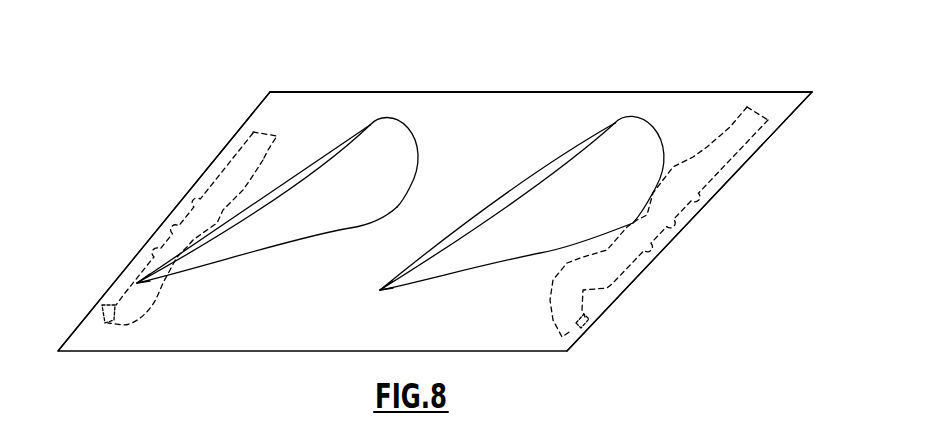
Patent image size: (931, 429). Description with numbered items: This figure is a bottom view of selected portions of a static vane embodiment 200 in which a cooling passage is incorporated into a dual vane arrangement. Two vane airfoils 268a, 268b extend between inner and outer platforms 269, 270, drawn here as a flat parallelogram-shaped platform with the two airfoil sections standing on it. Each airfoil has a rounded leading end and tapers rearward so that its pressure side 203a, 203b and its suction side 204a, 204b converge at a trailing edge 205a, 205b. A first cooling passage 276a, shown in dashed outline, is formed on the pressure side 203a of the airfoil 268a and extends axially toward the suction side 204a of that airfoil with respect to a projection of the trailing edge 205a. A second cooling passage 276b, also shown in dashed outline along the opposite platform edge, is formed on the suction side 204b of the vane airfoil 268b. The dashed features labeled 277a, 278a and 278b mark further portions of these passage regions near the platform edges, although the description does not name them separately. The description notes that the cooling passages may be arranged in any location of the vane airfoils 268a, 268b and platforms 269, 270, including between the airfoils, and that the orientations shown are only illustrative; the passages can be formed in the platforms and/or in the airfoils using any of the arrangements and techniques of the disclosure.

The embodiment 200 is at (750, 53).
The pressure side of the airfoil 203a is at (331, 147).
The pressure side of the airfoil 203b is at (562, 153).
The suction side of the airfoil 204a is at (252, 260).
The suction side of the airfoil 204b is at (472, 272).
The trailing edge 205a is at (131, 286).
The trailing edge 205b is at (380, 290).
The vane airfoil 268a is at (392, 118).
The vane airfoil 268b is at (650, 122).
The inner platform 269 is at (478, 92).
The outer platform 270 is at (478, 92).
The first cooling passage 276a is at (211, 178).
The second cooling passage 276b is at (742, 163).
The seal slot corner 277a is at (266, 130).
The first seal slot region 278a is at (100, 310).
The second seal slot region 278b is at (583, 326).